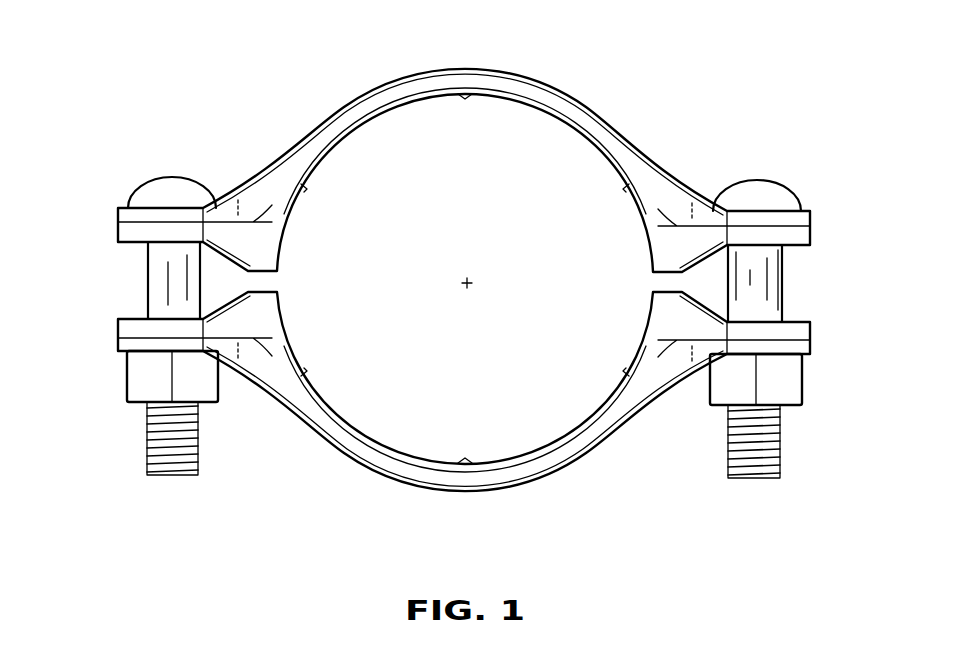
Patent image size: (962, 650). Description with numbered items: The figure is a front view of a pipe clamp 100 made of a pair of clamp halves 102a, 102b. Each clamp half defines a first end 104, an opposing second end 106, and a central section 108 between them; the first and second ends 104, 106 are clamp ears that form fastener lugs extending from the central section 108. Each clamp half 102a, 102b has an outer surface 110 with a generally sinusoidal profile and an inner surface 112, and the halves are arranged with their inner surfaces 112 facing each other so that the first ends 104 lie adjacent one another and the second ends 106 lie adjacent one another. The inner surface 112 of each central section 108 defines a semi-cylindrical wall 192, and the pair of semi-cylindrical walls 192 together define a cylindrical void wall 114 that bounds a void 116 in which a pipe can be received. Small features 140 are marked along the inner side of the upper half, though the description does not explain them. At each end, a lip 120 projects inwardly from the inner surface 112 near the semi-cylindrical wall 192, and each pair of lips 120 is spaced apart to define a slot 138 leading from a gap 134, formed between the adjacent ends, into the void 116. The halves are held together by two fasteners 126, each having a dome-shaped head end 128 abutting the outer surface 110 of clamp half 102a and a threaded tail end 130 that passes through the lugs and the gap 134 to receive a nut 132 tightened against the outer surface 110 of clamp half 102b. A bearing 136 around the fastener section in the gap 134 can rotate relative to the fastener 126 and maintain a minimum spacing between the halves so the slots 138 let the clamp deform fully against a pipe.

The pipe clamp 100 is at (150, 72).
The clamp half 102a is at (318, 105).
The clamp half 102b is at (363, 487).
The first end 104 is at (239, 197).
The second end 106 is at (682, 197).
The central section 108 is at (518, 72).
The outer surface 110 is at (602, 115).
The inner surface 112 is at (355, 433).
The cylindrical void wall 114 is at (603, 405).
The void 116 is at (437, 420).
The lip 120 is at (247, 293).
The fastener 126 is at (95, 424).
The dome-shaped head end 128 is at (153, 190).
The tail end 130 is at (145, 466).
The nut 132 is at (125, 372).
The gap 134 is at (812, 302).
The bearing 136 is at (148, 303).
The slot 138 is at (273, 283).
The tab 140 is at (466, 96).
The semi-cylindrical wall 192 is at (295, 216).